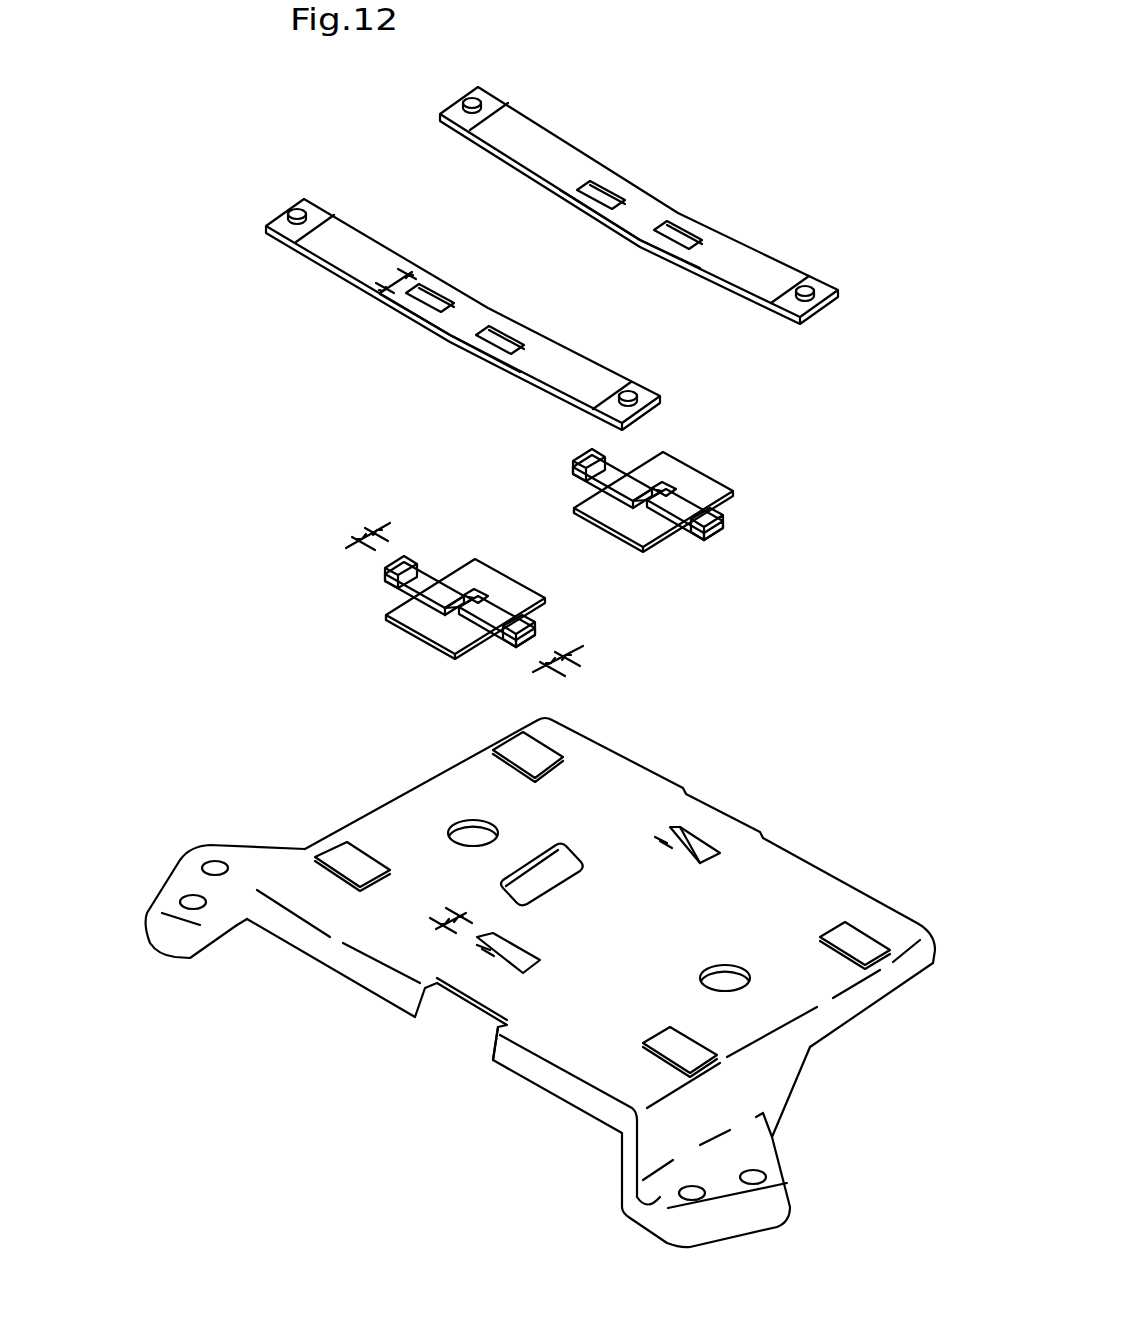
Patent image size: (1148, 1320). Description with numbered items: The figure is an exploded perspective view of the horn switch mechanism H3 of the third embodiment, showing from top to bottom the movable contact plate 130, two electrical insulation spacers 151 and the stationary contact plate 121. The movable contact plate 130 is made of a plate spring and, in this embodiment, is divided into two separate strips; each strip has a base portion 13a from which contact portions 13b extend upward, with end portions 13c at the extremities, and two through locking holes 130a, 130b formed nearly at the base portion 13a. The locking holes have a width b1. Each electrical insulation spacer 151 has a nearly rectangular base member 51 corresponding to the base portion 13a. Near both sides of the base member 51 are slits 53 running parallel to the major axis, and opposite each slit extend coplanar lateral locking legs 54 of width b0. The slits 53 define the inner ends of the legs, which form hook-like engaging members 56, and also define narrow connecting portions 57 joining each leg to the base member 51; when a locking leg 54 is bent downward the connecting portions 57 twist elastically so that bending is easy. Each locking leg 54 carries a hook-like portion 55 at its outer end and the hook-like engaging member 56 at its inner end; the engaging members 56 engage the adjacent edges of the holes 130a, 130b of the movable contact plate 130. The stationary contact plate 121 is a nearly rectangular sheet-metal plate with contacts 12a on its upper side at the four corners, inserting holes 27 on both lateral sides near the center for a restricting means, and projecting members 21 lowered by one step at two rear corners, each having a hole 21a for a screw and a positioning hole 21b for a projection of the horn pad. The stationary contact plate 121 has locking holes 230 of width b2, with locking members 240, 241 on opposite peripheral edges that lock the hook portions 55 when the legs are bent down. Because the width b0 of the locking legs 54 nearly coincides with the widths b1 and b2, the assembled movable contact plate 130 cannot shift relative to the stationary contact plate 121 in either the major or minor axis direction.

The movable contact plate 130 is at (544, 253).
The base portion 13a is at (643, 210).
The contact portions 13b is at (535, 120).
The mounting boss / end portion 13c is at (466, 101).
The locking hole 130a is at (613, 190).
The locking hole 130b is at (683, 228).
The width of the locking holes b1 is at (394, 277).
The electrical insulation spacer 151 is at (576, 556).
The base member 51 is at (478, 590).
The slits 53 is at (473, 572).
The locking legs 54 is at (433, 572).
The hook-like portion 55 is at (413, 565).
The hook-like engaging member 56 is at (412, 617).
The connecting portions 57 is at (425, 593).
The width of the locking legs b0 is at (452, 613).
The stationary contact plate 121 is at (540, 991).
The contacts 12a is at (338, 855).
The inserting holes 27 is at (478, 822).
The projecting members 21 is at (500, 1017).
The hole 21a is at (193, 897).
The positioning hole 21b is at (210, 868).
The locking hole 230 is at (705, 835).
The locking member 240 is at (665, 845).
The locking member 241 is at (705, 863).
The width of the locking holes b2 is at (459, 907).
The horn switch mechanism H3 is at (297, 1140).